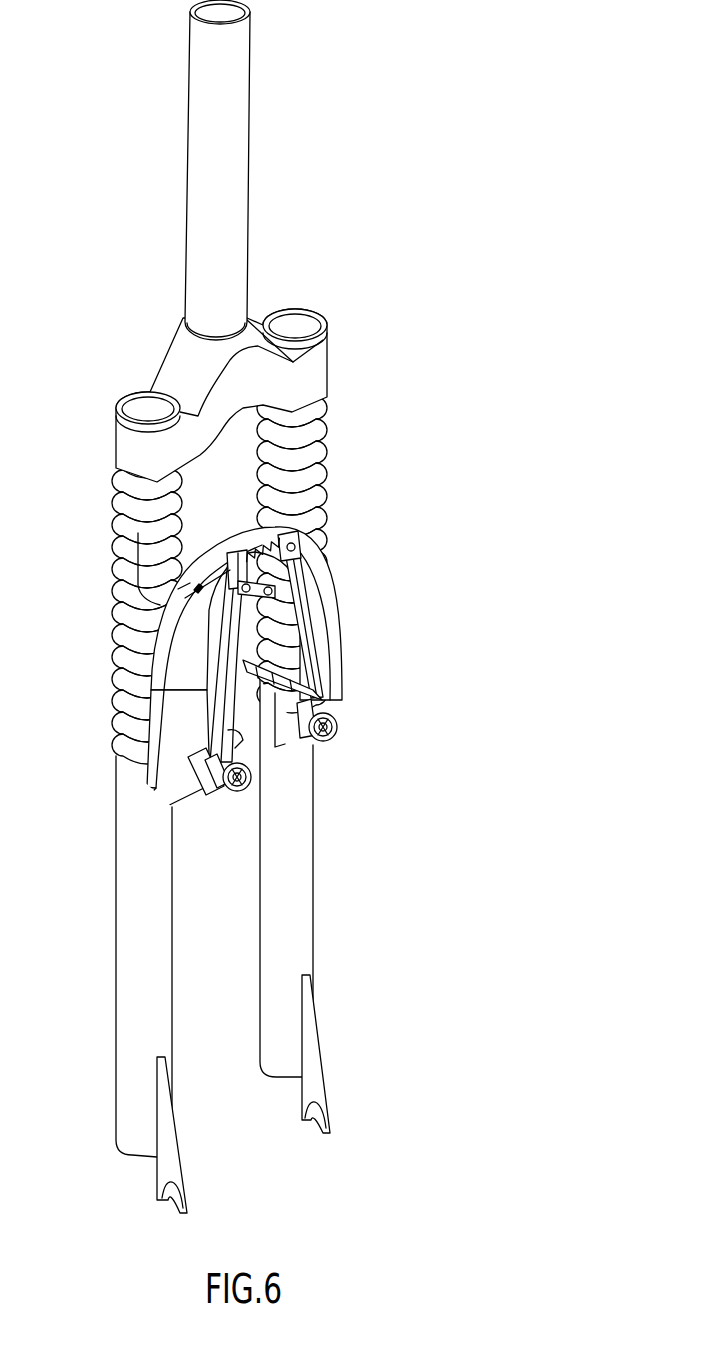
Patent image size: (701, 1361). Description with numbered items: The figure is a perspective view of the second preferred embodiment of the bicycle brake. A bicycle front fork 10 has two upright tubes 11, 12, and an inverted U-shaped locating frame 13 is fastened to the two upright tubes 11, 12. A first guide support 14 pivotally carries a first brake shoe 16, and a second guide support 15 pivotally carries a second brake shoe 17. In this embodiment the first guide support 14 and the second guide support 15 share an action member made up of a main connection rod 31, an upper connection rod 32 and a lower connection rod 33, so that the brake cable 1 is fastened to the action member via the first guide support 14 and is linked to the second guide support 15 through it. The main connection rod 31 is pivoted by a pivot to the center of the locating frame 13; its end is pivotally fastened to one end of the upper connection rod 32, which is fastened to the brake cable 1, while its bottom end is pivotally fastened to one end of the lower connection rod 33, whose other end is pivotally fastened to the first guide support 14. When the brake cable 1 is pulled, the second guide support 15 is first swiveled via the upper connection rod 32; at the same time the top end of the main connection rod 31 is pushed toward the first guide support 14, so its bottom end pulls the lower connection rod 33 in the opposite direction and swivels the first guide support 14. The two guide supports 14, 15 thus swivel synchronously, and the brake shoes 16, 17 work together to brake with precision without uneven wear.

The brake cable 1 is at (138, 552).
The bicycle front fork 10 is at (352, 255).
The upright tube 11 is at (123, 1078).
The upright tube 12 is at (313, 937).
The locating frame 13 is at (170, 745).
The first guide support 14 is at (227, 672).
The second guide support 15 is at (313, 650).
The first brake shoe 16 is at (241, 733).
The second brake shoe 17 is at (322, 692).
The main connection rod 31 is at (272, 563).
The upper connection rod 32 is at (297, 547).
The lower connection rod 33 is at (252, 608).